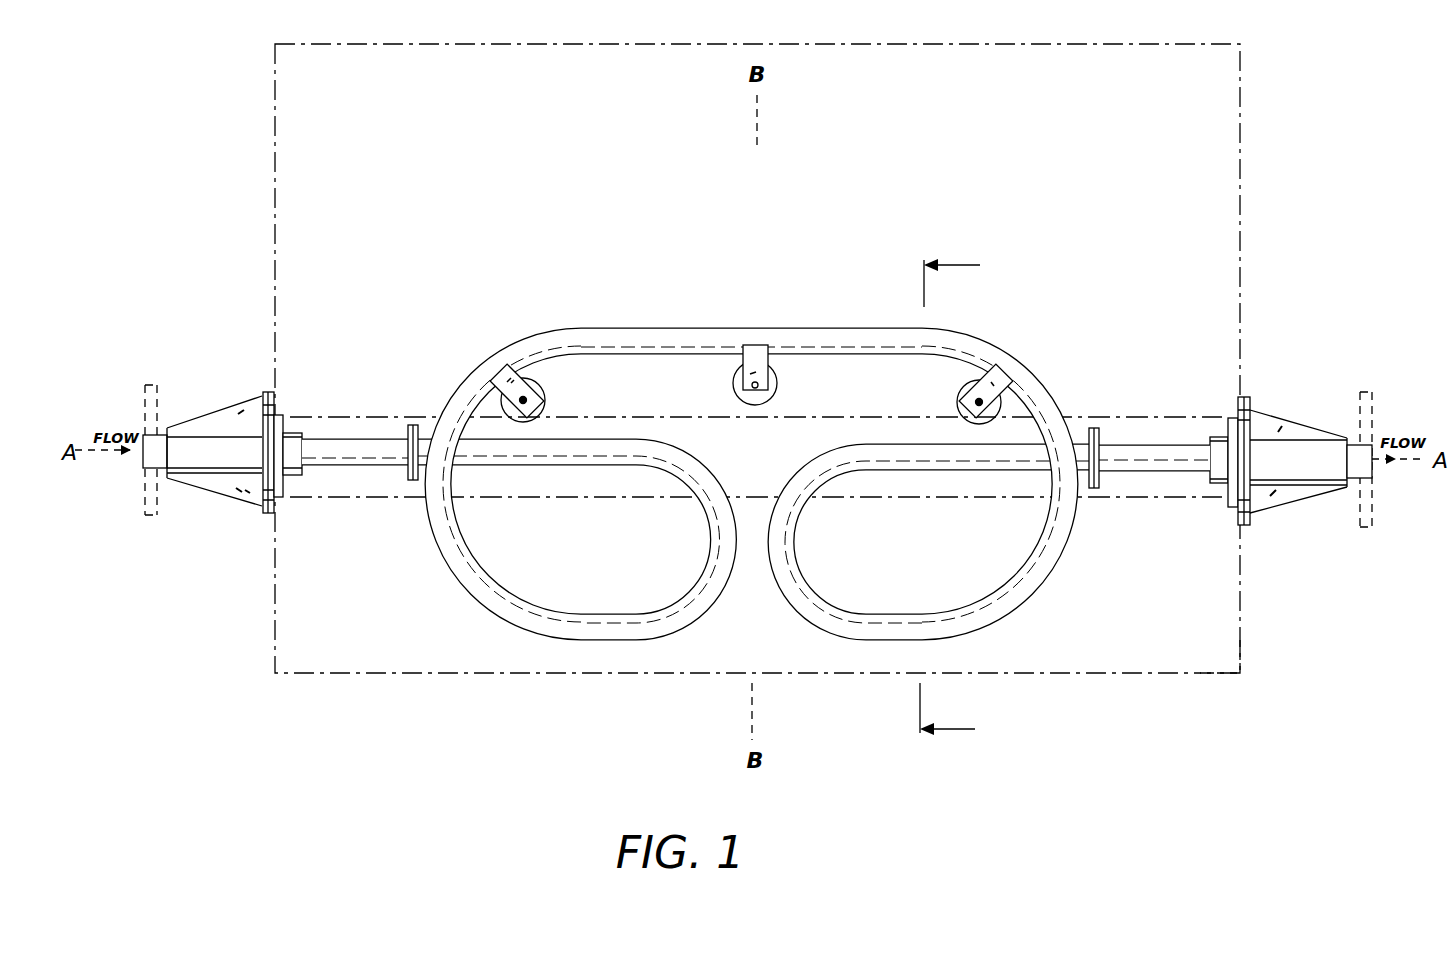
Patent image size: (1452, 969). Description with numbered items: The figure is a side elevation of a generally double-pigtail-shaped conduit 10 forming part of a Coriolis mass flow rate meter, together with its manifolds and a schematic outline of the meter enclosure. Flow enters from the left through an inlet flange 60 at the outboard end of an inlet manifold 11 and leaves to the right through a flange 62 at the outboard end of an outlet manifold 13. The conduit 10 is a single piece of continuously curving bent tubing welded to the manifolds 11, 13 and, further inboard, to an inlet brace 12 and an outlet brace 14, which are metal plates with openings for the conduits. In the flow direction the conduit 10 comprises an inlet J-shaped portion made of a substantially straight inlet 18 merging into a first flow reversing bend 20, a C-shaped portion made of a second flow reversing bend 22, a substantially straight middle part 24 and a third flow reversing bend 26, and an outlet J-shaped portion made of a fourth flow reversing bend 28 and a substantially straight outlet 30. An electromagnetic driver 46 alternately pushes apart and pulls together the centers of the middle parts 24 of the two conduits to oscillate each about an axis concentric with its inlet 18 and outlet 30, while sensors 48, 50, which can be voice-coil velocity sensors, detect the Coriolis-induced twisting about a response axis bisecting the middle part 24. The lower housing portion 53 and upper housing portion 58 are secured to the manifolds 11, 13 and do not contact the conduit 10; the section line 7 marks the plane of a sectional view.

The section line 7- 7 is at (962, 499).
The double-pigtail-shaped conduit 10 is at (1035, 323).
The inlet manifold 11 is at (203, 498).
The inlet brace 12 is at (411, 424).
The outlet manifold 13 is at (1292, 508).
The outlet brace 14 is at (1092, 491).
The substantially straight inlet 18 is at (319, 470).
The first flow reversing bend 20 is at (717, 600).
The second flow reversing bend 22 is at (449, 398).
The substantially straight middle part 24 is at (713, 327).
The third flow reversing bend 26 is at (1058, 392).
The fourth flow reversing bend 28 is at (775, 590).
The substantially straight outlet 30 is at (1193, 477).
The electromagnetic driver 46 is at (731, 397).
The sensor 48 is at (547, 394).
The sensor 50 is at (956, 395).
The lower housing portion 53 is at (1240, 652).
The upper housing portion 58 is at (1242, 220).
The inlet flange 60 is at (144, 384).
The outlet flange 62 is at (1360, 391).